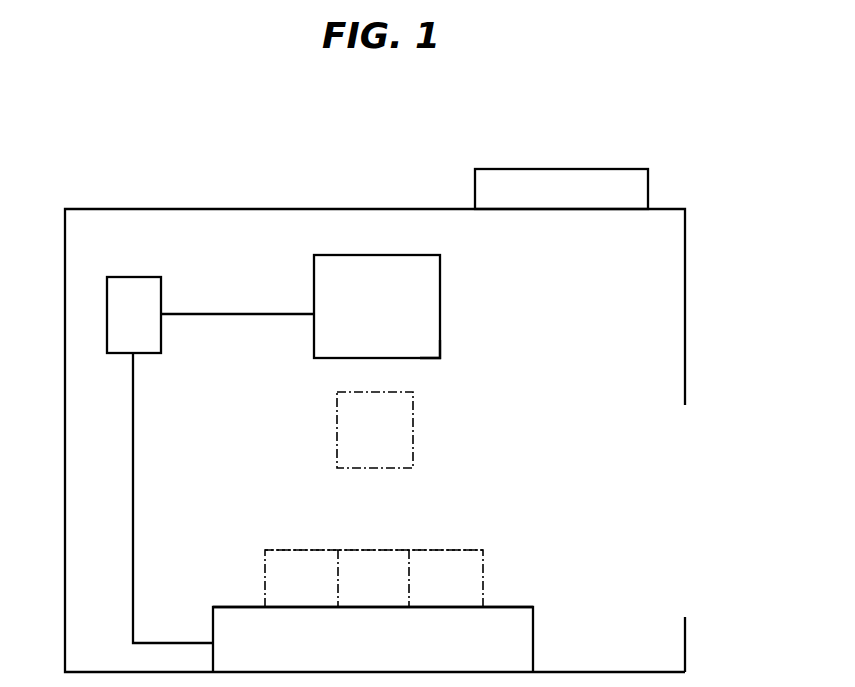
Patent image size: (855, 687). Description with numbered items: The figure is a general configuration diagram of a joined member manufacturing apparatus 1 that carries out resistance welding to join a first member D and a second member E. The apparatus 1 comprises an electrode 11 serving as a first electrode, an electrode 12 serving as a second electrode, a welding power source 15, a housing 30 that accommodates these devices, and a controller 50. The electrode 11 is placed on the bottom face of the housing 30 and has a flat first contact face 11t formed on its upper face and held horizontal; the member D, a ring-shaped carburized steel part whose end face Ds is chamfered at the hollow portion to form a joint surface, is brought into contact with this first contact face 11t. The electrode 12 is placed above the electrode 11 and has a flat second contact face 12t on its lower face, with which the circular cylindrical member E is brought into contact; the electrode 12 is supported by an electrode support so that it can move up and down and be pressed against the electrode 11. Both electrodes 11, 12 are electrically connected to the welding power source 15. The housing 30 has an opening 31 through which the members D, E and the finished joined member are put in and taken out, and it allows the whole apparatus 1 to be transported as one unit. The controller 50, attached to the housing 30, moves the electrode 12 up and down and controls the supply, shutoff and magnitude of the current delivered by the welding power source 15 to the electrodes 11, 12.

The joined member manufacturing apparatus 1 is at (92, 161).
The electrode 11 is at (533, 648).
The first contact face 11t is at (522, 605).
The electrode 12 is at (440, 314).
The second contact face 12t is at (427, 359).
The welding power source 15 is at (147, 277).
The housing 30 is at (685, 351).
The opening 31 is at (688, 478).
The controller 50 is at (623, 169).
The member D is at (484, 573).
The end face Ds is at (456, 549).
The member E is at (413, 440).